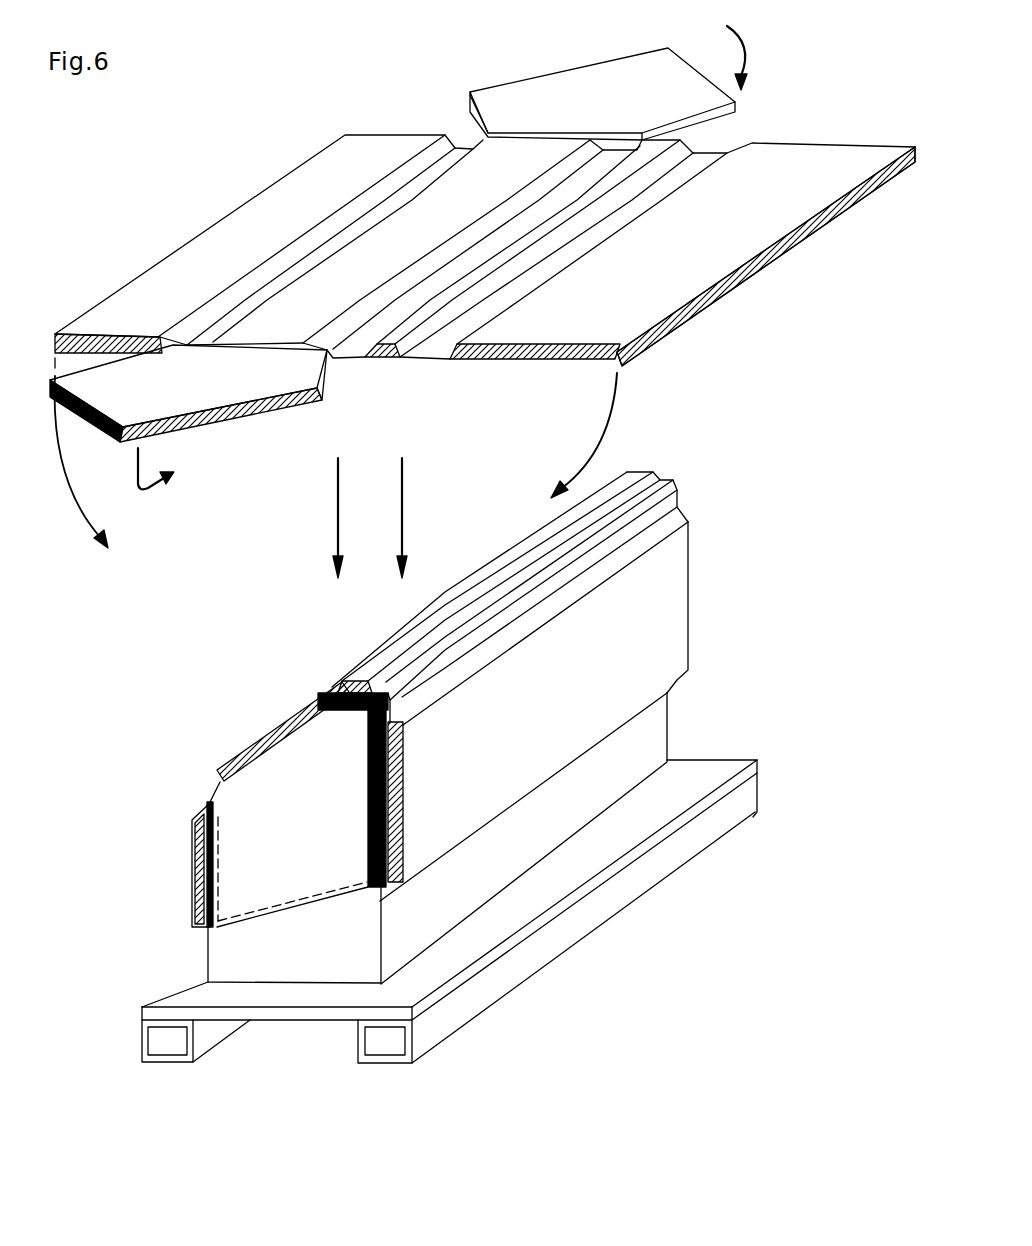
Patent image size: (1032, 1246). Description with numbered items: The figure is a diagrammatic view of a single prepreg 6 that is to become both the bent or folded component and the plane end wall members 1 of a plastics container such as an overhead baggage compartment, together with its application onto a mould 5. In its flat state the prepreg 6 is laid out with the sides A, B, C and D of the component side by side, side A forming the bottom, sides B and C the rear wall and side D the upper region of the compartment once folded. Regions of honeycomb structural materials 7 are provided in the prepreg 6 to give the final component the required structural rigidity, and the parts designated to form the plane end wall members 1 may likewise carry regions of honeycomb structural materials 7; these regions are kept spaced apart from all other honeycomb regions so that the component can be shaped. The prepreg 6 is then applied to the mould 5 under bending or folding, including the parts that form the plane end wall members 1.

The plane end wall member 1 is at (563, 82).
The mould 5 is at (607, 850).
The prepreg 6 is at (800, 157).
The honeycomb structural material region 7 is at (763, 263).
The side A is at (773, 157).
The side B is at (667, 148).
The side C is at (562, 150).
The side D is at (397, 148).